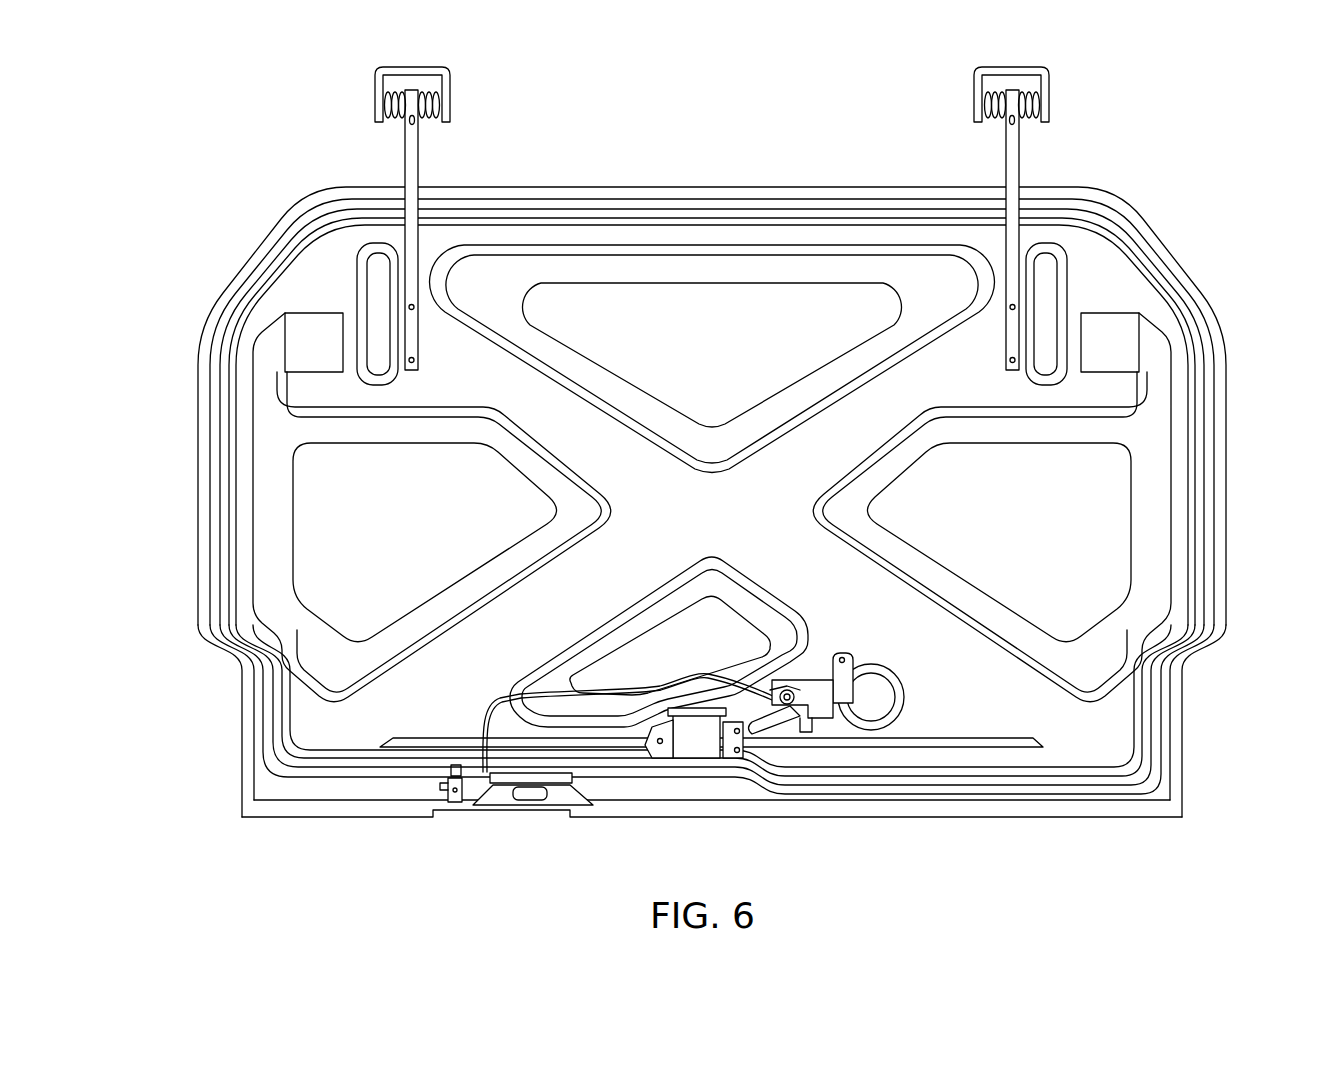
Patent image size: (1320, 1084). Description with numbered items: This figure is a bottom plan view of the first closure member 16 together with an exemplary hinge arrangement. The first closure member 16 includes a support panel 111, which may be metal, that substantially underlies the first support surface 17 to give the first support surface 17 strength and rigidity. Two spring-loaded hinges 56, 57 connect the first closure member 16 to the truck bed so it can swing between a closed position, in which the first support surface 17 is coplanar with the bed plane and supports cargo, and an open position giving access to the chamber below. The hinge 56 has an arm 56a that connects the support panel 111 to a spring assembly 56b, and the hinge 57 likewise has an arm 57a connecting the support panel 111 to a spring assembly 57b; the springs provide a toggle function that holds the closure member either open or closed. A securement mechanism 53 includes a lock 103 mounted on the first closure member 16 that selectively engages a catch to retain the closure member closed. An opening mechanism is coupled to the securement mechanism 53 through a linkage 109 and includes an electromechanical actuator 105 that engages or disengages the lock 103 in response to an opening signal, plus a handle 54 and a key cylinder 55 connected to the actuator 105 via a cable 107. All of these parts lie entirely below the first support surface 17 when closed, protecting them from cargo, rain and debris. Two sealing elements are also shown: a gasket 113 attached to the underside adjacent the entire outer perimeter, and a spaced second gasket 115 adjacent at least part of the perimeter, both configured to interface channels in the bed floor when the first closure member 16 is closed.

The first closure member 16 is at (175, 470).
The first support surface 17 is at (605, 812).
The securement mechanism 53 is at (838, 832).
The handle 54 is at (520, 797).
The key cylinder 55 is at (447, 792).
The hinge 56 is at (940, 118).
The arm 56a is at (992, 148).
The spring assembly 56b is at (973, 102).
The hinge 57 is at (480, 120).
The arm 57a is at (432, 152).
The spring assembly 57b is at (452, 102).
The lock 103 is at (700, 762).
The electromechanical actuator 105 is at (823, 658).
The cable 107 is at (627, 695).
The linkage 109 is at (745, 718).
The support panel 111 is at (980, 381).
The gasket 113 is at (1211, 388).
The gasket 115 is at (1225, 437).